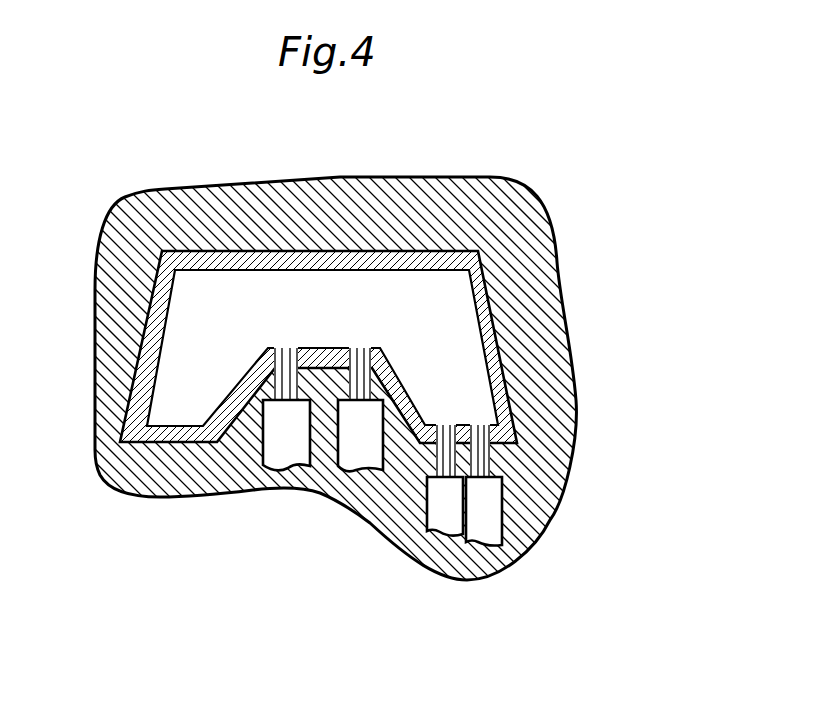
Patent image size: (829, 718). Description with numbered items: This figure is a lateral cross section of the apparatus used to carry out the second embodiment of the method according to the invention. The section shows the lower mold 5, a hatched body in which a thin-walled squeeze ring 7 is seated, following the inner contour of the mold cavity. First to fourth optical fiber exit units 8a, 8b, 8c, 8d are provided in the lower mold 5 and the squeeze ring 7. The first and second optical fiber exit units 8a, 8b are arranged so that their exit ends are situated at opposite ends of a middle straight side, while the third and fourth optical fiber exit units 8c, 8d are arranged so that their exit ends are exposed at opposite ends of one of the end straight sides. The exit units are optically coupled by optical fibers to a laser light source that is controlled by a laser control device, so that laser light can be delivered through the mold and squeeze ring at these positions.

The lower mold 5 is at (435, 192).
The squeeze ring 7 is at (493, 313).
The first optical fiber exit unit 8a is at (262, 452).
The second optical fiber exit unit 8b is at (345, 452).
The third optical fiber exit unit 8c is at (432, 507).
The fourth optical fiber exit unit 8d is at (487, 517).